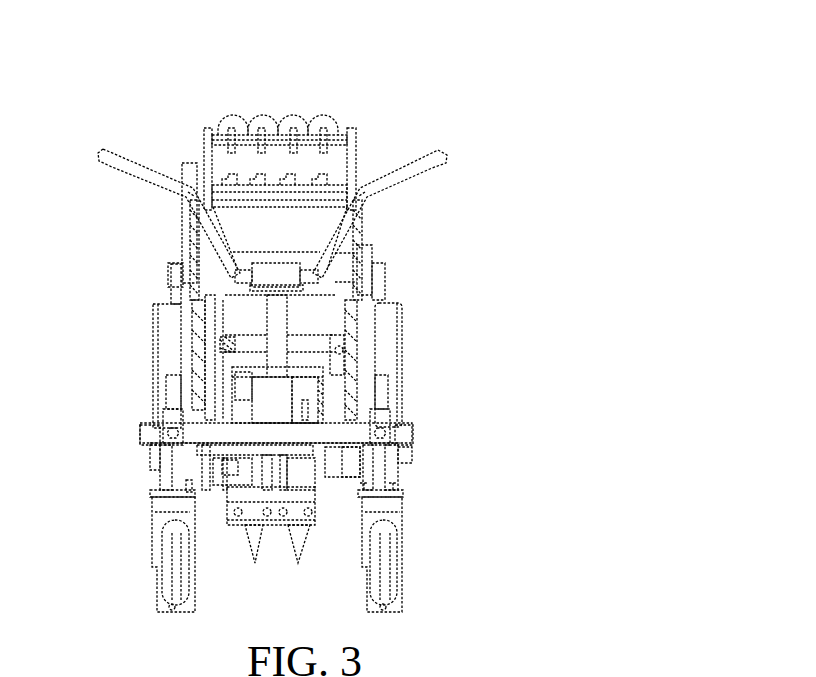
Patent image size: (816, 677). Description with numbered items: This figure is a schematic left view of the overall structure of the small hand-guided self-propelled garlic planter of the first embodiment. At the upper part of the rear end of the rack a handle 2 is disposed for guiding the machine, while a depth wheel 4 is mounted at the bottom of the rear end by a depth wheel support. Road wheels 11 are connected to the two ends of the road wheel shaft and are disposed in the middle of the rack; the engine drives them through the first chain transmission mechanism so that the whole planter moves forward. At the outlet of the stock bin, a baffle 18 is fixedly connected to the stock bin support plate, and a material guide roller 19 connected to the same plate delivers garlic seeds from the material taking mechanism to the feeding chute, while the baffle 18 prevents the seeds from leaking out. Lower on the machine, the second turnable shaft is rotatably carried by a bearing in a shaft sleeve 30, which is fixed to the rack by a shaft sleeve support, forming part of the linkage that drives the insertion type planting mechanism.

The handle 2 is at (438, 152).
The depth wheel 4 is at (385, 570).
The road wheel 11 is at (380, 328).
The baffle 18 is at (258, 118).
The material guide roller 19 is at (328, 118).
The shaft sleeve 30 is at (233, 525).